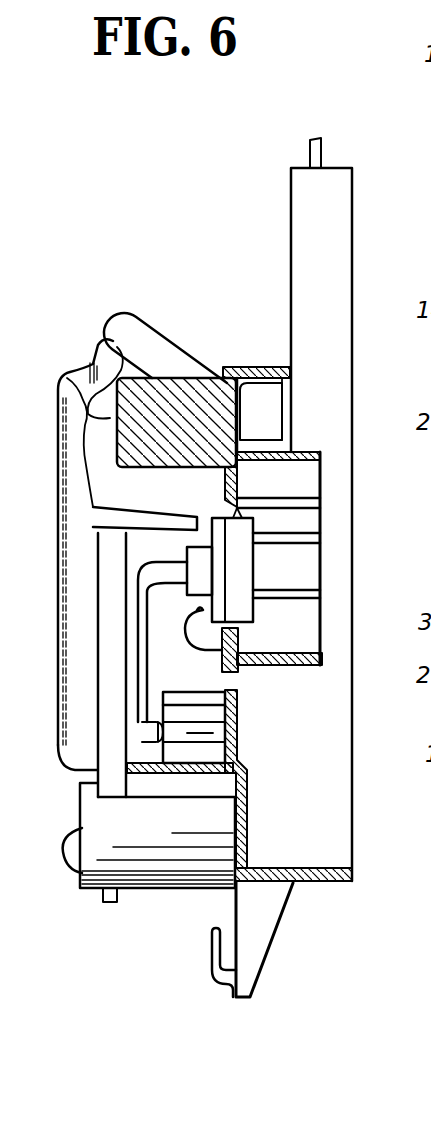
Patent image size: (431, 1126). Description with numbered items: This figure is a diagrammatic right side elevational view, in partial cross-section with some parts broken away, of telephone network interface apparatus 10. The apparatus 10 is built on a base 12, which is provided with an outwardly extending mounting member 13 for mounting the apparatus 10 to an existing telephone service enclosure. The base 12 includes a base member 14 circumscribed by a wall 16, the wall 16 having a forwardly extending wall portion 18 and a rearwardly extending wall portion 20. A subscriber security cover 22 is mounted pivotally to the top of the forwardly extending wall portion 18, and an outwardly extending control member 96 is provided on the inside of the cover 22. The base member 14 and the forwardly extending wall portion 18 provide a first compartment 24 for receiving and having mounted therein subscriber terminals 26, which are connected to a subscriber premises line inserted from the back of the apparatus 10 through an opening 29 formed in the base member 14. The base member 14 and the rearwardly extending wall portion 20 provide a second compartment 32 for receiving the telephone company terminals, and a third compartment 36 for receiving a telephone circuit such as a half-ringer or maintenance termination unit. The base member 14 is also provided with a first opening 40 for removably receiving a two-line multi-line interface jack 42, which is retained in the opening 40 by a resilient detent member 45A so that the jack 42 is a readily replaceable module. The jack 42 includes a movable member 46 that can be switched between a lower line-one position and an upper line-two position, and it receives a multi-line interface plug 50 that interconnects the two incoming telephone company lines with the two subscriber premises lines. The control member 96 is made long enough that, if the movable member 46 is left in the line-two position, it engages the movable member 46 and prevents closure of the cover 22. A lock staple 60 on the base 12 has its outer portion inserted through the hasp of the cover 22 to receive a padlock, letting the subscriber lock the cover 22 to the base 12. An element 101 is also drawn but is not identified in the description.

The telephone network interface apparatus 10 is at (130, 285).
The base 12 is at (220, 348).
The outwardly extending mounting member 13 is at (345, 222).
The base member 14 is at (238, 483).
The wall 16 is at (181, 374).
The forwardly extending wall portion 18 is at (67, 380).
The rearwardly extending wall portion 20 is at (267, 365).
The subscriber security cover 22 is at (58, 522).
The first compartment 24 is at (200, 752).
The subscriber terminals 26 is at (143, 732).
The opening 29 is at (252, 682).
The second compartment 32 is at (290, 542).
The third compartment 36 is at (267, 417).
The first opening 40 is at (240, 514).
The multi-line interface jack 42 is at (253, 567).
The resilient detent member 45A is at (182, 622).
The movable member 46 is at (210, 533).
The multi-line interface plug 50 is at (187, 597).
The lock staple 60 is at (73, 877).
The outwardly extending control member 96 is at (83, 455).
The pin 101 is at (312, 148).